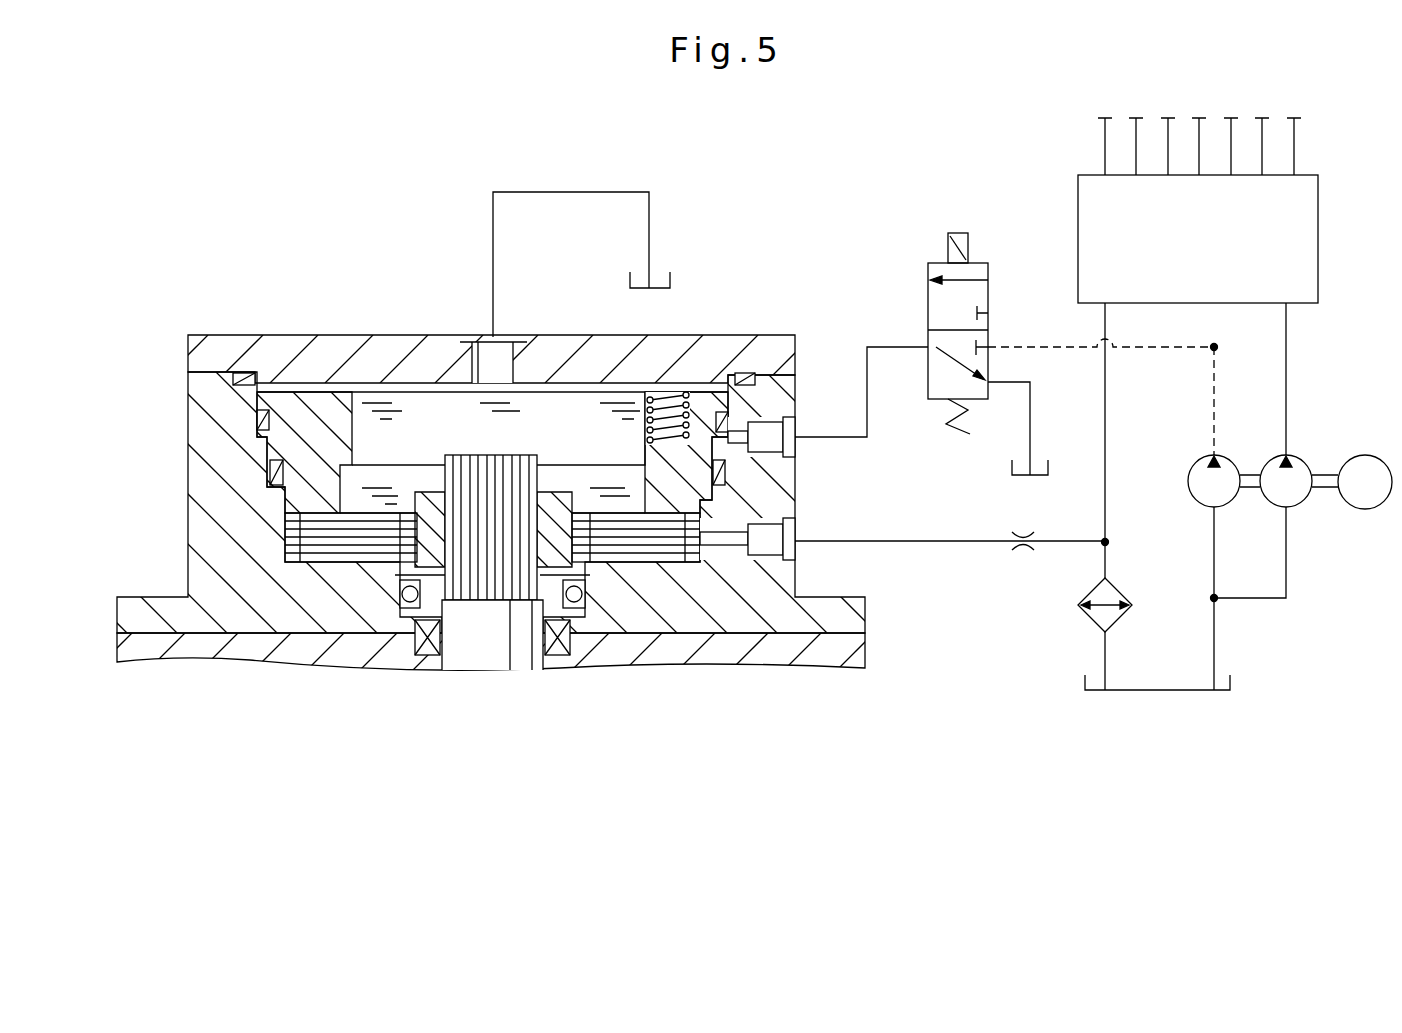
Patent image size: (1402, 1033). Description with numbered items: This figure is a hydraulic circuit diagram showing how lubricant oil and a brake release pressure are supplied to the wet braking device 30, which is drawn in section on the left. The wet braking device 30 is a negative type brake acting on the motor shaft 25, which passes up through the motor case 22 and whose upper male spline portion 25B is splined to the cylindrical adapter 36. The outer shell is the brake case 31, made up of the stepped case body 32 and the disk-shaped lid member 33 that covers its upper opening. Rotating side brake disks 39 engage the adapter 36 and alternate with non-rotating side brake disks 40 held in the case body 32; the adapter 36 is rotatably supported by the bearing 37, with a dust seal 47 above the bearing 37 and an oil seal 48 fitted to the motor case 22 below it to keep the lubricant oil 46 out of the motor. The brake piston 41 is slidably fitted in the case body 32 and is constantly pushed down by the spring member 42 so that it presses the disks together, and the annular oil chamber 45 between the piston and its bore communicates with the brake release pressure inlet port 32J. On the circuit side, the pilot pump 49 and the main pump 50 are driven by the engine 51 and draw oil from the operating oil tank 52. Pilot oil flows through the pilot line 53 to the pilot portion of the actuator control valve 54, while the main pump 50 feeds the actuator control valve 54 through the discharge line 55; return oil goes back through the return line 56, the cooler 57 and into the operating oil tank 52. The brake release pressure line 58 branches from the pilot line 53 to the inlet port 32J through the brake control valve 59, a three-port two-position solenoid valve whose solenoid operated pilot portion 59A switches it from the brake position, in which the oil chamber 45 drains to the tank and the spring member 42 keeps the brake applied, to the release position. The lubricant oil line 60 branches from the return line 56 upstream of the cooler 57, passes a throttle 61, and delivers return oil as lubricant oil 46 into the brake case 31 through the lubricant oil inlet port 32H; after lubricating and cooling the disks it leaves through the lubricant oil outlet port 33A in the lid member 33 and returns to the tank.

The motor case 22 is at (722, 648).
The motor shaft 25 is at (488, 650).
The upper male spline portion 25B is at (467, 470).
The wet braking device 30 is at (538, 465).
The brake case 31 is at (538, 429).
The case body 32 is at (225, 530).
The lubricant oil inlet port 32H is at (770, 548).
The brake release pressure inlet port 32J is at (767, 430).
The lid member 33 is at (300, 380).
The lubricant oil outlet port 33A is at (488, 337).
The adapter 36 is at (556, 490).
The bearing 37 is at (565, 630).
The rotating side brake disks 39 is at (597, 510).
The non-rotating side brake disks 40 is at (328, 535).
The brake piston 41 is at (305, 437).
The spring member 42 is at (682, 388).
The oil chamber 45 is at (720, 442).
The lubricant oil 46 is at (395, 415).
The dust seal 47 is at (395, 580).
The oil seal 48 is at (416, 640).
The pilot pump 49 is at (1190, 490).
The main pump 50 is at (1298, 458).
The engine 51 is at (1362, 510).
The operating oil tank 52 is at (1008, 468).
The pilot line 53 is at (1212, 384).
The actuator control valve 54 is at (1318, 228).
The discharge line 55 is at (1290, 368).
The return line 56 is at (1107, 448).
The cooler 57 is at (1085, 620).
The brake release pressure line 58 is at (865, 395).
The brake control valve 59 is at (927, 272).
The solenoid operated pilot portion 59A is at (959, 236).
The lubricant oil line 60 is at (918, 543).
The throttle 61 is at (1023, 552).